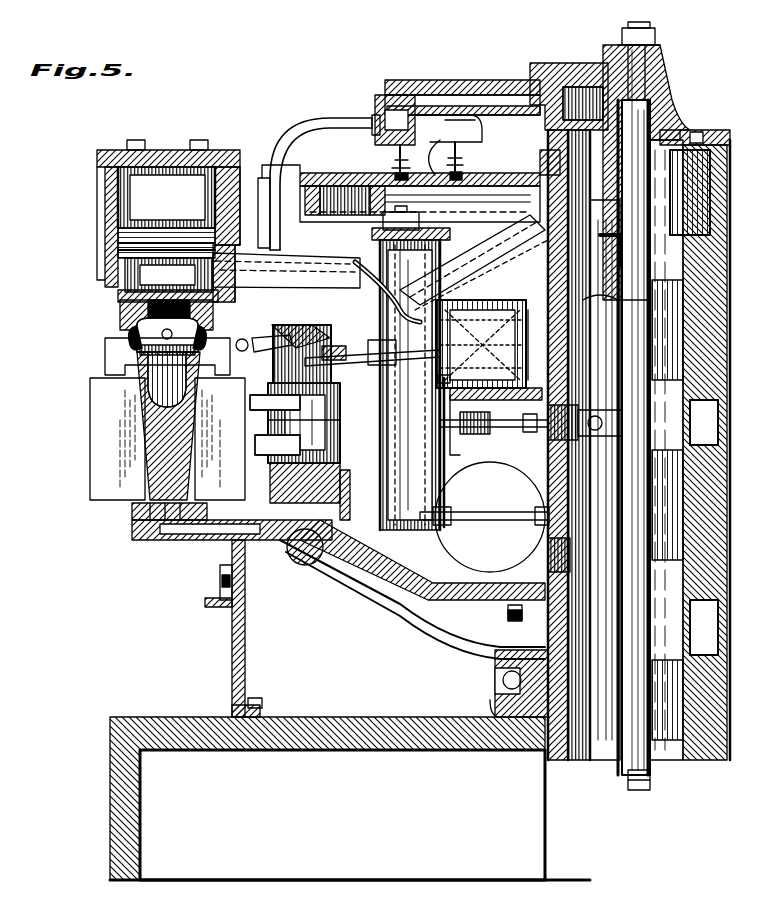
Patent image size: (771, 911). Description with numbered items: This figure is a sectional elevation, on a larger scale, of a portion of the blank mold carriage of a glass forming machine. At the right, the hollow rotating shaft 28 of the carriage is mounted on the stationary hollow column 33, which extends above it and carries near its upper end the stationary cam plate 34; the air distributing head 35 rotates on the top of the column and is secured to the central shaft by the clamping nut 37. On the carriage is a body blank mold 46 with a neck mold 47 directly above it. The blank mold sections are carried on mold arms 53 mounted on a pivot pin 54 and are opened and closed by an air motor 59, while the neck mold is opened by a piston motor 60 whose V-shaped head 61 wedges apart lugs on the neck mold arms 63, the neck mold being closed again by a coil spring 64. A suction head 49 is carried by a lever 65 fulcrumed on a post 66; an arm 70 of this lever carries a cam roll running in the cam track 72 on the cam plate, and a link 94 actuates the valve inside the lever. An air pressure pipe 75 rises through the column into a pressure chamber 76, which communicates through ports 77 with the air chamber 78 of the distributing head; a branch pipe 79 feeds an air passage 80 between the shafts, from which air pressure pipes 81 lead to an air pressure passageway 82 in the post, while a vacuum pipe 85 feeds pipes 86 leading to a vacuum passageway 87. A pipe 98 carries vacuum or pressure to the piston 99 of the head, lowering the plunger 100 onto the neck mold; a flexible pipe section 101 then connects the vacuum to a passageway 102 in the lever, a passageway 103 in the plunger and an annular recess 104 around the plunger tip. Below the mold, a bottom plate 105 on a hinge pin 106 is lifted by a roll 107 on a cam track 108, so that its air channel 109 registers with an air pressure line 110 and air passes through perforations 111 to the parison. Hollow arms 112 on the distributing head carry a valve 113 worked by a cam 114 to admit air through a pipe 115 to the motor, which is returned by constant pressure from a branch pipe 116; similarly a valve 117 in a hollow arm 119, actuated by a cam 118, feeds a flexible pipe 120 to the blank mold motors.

The hollow rotating shaft 28 is at (548, 768).
The stationary hollow column 33 is at (560, 277).
The stationary cam plate 34 is at (520, 174).
The air distributing head 35 is at (568, 63).
The clamping nut 37 is at (650, 45).
The body blank mold 46 is at (100, 470).
The neck mold 47 is at (105, 350).
The suction head 49 is at (105, 207).
The mold arms 53 is at (262, 462).
The pivot pin 54 is at (300, 325).
The air motor 59 is at (490, 517).
The piston motor 60 is at (466, 310).
The V-shaped head 61 is at (372, 359).
The neck mold arms 63 is at (266, 337).
The coil spring 64 is at (242, 339).
The lever 65 is at (340, 318).
The post 66 is at (440, 492).
The arm 70 is at (502, 325).
The cam track 72 is at (338, 216).
The air pressure pipe 75 is at (640, 380).
The pressure chamber 76 is at (545, 162).
The ports 77 is at (690, 130).
The air chamber 78 is at (602, 63).
The branch pipe 79 is at (520, 622).
The air passage 80 is at (548, 552).
The air pressure pipes 81 is at (500, 514).
The air pressure passageway 82 is at (380, 472).
The vacuum pipe 85 is at (630, 778).
The vacuum pipes 86 is at (520, 430).
The vacuum passageway 87 is at (430, 296).
The link 94 is at (383, 222).
The pipe 98 is at (270, 190).
The piston 99 is at (118, 236).
The plunger 100 is at (120, 310).
The flexible pipe section 101 is at (380, 314).
The passageway 102 is at (286, 275).
The passageway 103 is at (130, 298).
The annular recess 104 is at (136, 345).
The mold bottom plate 105 is at (132, 512).
The hinge pin 106 is at (340, 578).
The roll 107 is at (220, 584).
The cam track 108 is at (205, 603).
The air channel 109 is at (298, 560).
The air pressure line 110 is at (395, 598).
The perforations 111 is at (132, 530).
The hollow arms 112 is at (478, 80).
The valve 113 is at (400, 95).
The cam 114 is at (394, 158).
The pipe 115 is at (324, 118).
The branch pipe 116 is at (446, 460).
The valve 117 is at (455, 152).
The cam 118 is at (440, 174).
The hollow arm 119 is at (468, 129).
The flexible pipe 120 is at (440, 277).